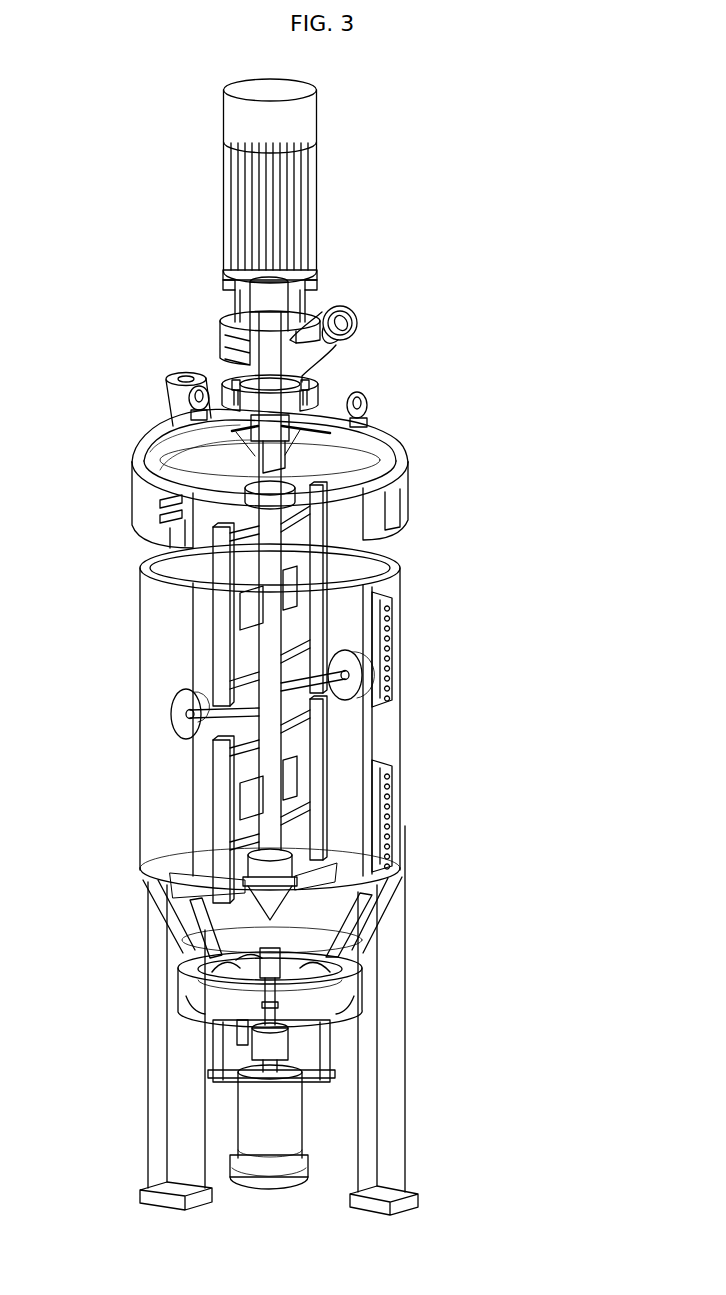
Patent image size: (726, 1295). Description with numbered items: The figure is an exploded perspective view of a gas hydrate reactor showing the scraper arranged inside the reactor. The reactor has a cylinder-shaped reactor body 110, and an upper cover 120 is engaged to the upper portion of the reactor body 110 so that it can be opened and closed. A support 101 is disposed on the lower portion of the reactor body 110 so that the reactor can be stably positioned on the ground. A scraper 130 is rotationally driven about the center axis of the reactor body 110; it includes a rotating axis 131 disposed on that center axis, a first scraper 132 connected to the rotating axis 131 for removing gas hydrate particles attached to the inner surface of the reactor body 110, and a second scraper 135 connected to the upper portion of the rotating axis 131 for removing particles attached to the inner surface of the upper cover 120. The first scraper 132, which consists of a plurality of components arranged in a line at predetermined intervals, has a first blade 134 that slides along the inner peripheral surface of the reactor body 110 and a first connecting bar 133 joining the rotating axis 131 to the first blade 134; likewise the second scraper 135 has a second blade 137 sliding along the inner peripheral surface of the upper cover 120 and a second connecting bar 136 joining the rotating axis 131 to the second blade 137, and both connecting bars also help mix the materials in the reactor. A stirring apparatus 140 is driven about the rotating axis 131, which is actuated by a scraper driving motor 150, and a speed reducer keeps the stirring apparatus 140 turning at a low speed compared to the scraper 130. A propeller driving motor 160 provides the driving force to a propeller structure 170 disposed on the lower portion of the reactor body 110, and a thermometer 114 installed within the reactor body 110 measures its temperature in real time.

The support 101 is at (157, 1038).
The reactor body 110 is at (156, 787).
The thermometer 114 is at (208, 707).
The upper cover 120 is at (188, 427).
The scraper 130 is at (397, 616).
The rotating axis 131 is at (275, 707).
The first scraper 132 is at (382, 692).
The first connecting bar 133 is at (297, 650).
The first blade 134 is at (315, 580).
The second scraper 135 is at (386, 418).
The second connecting bar 136 is at (350, 447).
The second blade 137 is at (320, 402).
The stirring apparatus 140 is at (243, 608).
The scraper driving motor 150 is at (293, 212).
The propeller driving motor 160 is at (252, 1132).
The propeller structure 170 is at (370, 988).